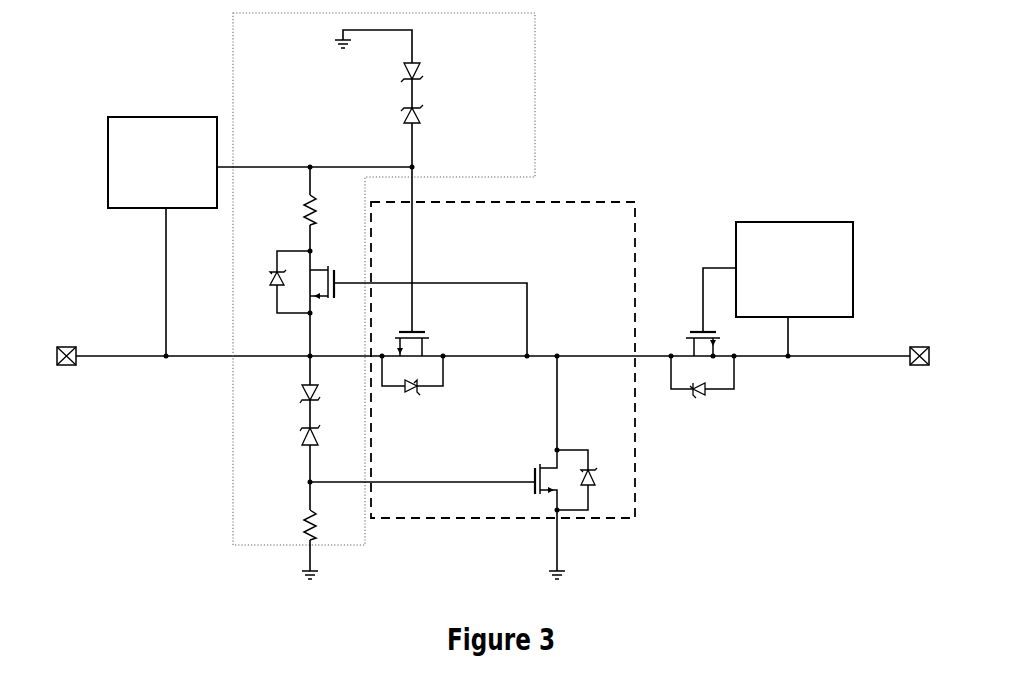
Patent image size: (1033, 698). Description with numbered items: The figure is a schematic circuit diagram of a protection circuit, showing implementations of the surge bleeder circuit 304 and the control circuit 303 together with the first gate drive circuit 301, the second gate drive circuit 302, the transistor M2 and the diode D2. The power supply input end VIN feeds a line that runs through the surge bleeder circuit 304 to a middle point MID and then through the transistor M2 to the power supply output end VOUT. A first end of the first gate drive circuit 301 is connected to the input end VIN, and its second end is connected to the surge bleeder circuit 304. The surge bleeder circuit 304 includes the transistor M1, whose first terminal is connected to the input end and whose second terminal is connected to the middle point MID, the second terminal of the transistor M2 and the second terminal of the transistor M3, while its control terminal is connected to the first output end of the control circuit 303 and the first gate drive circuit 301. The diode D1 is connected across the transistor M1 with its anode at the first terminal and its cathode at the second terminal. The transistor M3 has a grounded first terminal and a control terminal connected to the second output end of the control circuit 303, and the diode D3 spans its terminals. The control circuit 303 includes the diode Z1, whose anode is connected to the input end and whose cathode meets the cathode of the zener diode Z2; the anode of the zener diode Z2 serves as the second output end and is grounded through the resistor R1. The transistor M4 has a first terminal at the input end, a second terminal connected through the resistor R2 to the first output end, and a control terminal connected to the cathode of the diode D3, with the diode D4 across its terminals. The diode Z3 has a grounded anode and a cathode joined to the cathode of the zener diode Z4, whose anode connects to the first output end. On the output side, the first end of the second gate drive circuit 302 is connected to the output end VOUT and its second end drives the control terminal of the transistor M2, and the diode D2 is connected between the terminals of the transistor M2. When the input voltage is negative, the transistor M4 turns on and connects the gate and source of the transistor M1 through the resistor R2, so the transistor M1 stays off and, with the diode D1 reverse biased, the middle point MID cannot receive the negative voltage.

The first gate drive circuit 301 is at (107, 166).
The second gate drive circuit 302 is at (853, 224).
The control circuit 303 is at (578, 43).
The surge bleeder circuit 304 is at (634, 213).
The transistor M1 is at (425, 261).
The transistor M2 is at (683, 338).
The transistor M3 is at (433, 480).
The transistor M4 is at (420, 299).
The diode D1 is at (413, 390).
The diode D2 is at (703, 390).
The diode D3 is at (593, 480).
The diode D4 is at (276, 278).
The diode Z1 is at (288, 399).
The zener diode Z2 is at (288, 440).
The diode Z3 is at (435, 75).
The zener diode Z4 is at (435, 115).
The resistor R1 is at (289, 525).
The resistor R2 is at (289, 208).
The input voltage terminal VIN is at (66, 339).
The output voltage terminal VOUT is at (921, 341).
The middle point MID is at (564, 448).